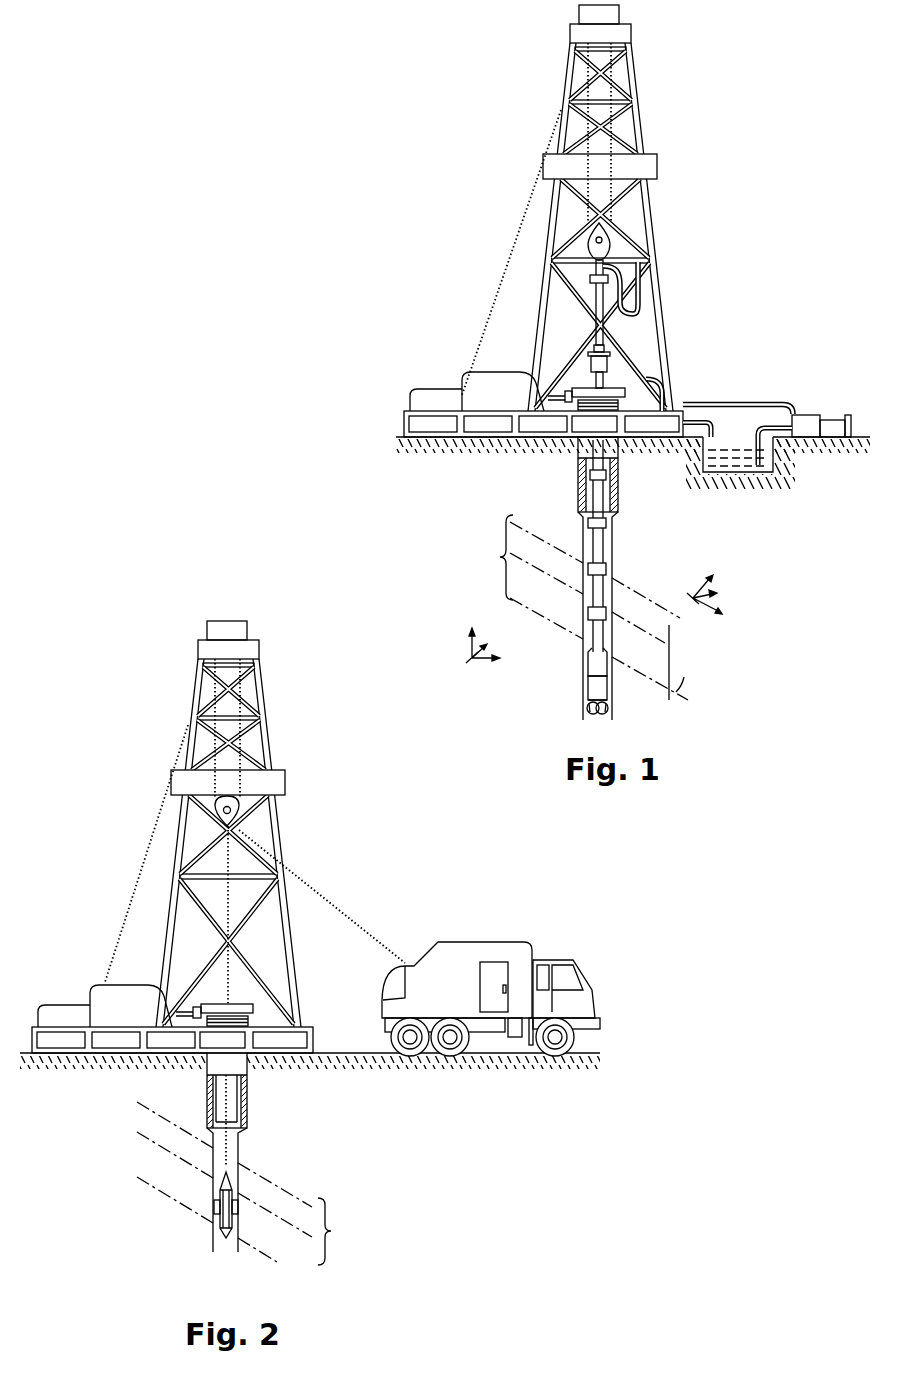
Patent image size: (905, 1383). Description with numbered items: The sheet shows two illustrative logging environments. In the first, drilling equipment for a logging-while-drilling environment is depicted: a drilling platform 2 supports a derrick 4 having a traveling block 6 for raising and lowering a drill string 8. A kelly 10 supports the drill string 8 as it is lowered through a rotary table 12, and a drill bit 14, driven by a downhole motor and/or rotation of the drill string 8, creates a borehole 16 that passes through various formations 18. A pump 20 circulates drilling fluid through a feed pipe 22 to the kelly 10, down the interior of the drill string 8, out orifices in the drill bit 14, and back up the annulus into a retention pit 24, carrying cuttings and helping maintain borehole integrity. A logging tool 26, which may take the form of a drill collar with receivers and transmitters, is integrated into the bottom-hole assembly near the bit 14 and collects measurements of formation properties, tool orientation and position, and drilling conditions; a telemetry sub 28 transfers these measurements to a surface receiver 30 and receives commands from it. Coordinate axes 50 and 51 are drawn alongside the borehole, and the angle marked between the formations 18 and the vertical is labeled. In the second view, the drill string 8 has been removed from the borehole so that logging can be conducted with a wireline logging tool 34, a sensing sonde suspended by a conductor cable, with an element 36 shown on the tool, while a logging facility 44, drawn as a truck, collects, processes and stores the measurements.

In FIG. 1, the drilling platform 2 is at (404, 414).
In FIG. 2, the drilling platform 2 is at (313, 1030).
In FIG. 1, the derrick 4 is at (640, 128).
In FIG. 2, the derrick 4 is at (300, 1007).
In FIG. 1, the traveling block 6 is at (608, 237).
In FIG. 2, the traveling block 6 is at (240, 809).
In FIG. 1, the drill string 8 is at (600, 551).
In FIG. 1, the kelly 10 is at (600, 296).
In FIG. 1, the rotary table 12 is at (620, 387).
In FIG. 2, the rotary table 12 is at (250, 1004).
In FIG. 1, the drill bit 14 is at (608, 708).
In FIG. 1, the borehole 16 is at (614, 558).
In FIG. 1, the formations 18 is at (575, 607).
In FIG. 2, the formations 18 is at (252, 1183).
In FIG. 1, the pump 20 is at (805, 418).
In FIG. 1, the feed pipe 22 is at (752, 402).
In FIG. 1, the retention pit 24 is at (727, 460).
In FIG. 1, the logging tool 26 is at (593, 682).
In FIG. 1, the telemetry sub 28 is at (592, 664).
In FIG. 1, the surface receiver 30 is at (608, 356).
In FIG. 2, the wireline logging tool 34 is at (227, 1200).
In FIG. 2, the centralizer 36 is at (215, 1212).
In FIG. 2, the logging facility 44 is at (466, 942).
In FIG. 1, the earth coordinate system 50 is at (455, 655).
In FIG. 1, the tool coordinate system 51 is at (722, 578).